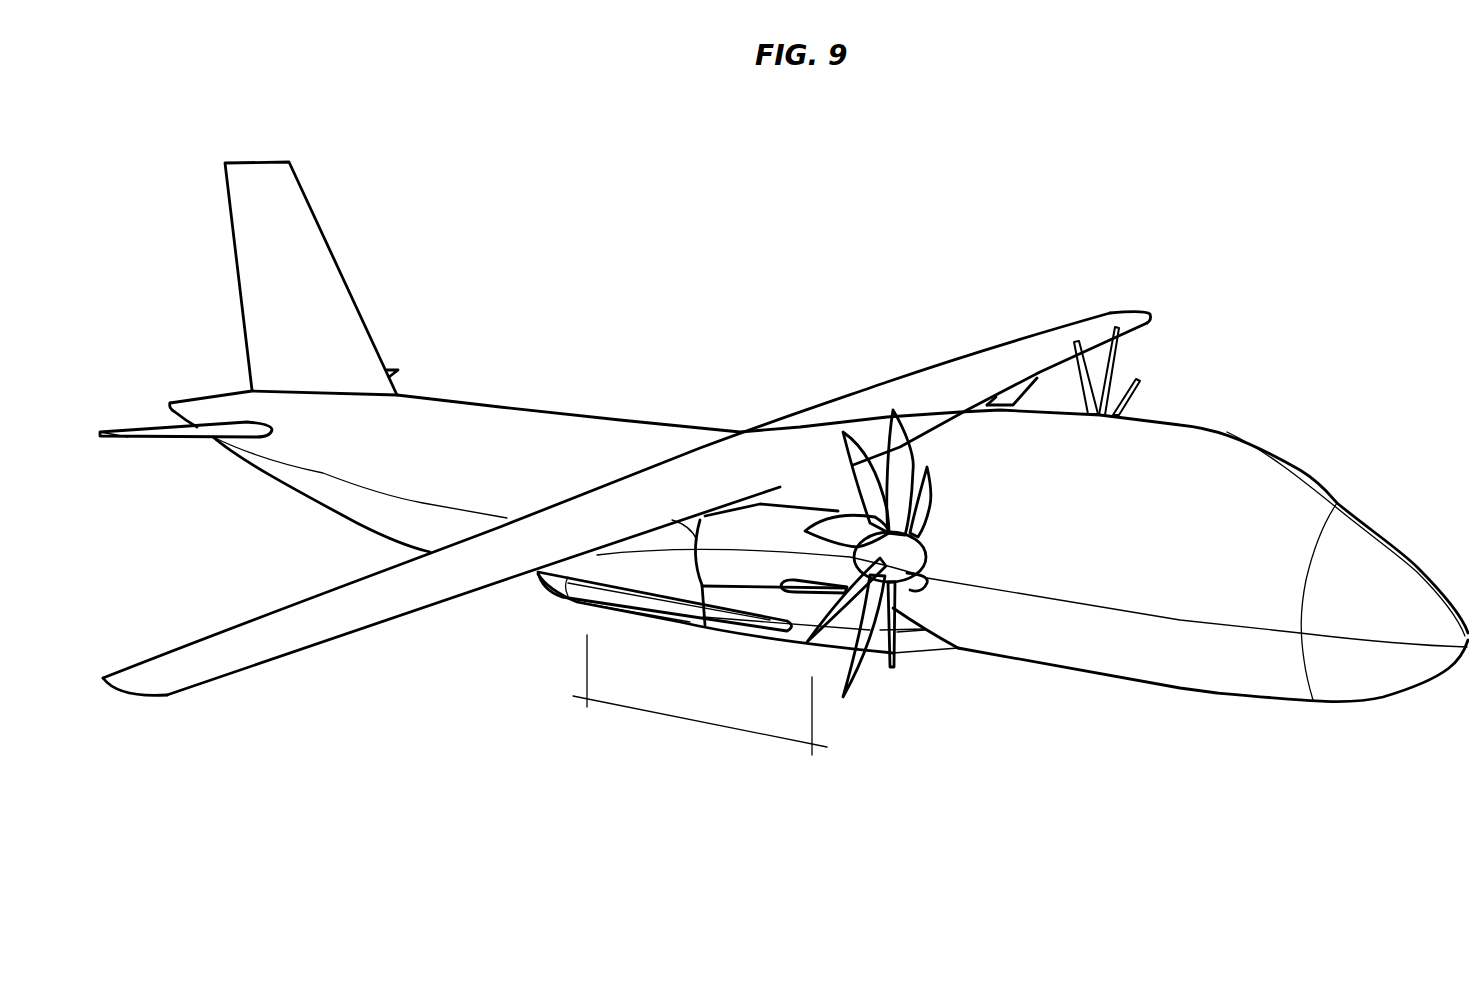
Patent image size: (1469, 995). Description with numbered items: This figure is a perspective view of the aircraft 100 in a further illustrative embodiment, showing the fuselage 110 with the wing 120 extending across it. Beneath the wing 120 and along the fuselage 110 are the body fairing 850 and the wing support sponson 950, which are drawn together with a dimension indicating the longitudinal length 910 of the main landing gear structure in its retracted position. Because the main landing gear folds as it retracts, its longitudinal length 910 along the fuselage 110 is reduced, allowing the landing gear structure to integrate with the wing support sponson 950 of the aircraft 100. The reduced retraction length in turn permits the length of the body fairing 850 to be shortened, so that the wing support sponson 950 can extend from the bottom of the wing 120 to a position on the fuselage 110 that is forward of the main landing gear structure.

The aircraft 100 is at (784, 463).
The fuselage 110 is at (496, 430).
The wing 120 is at (625, 493).
The body fairing 850 is at (655, 610).
The wing support sponson 950 is at (607, 580).
The longitudinal length 910 is at (707, 722).